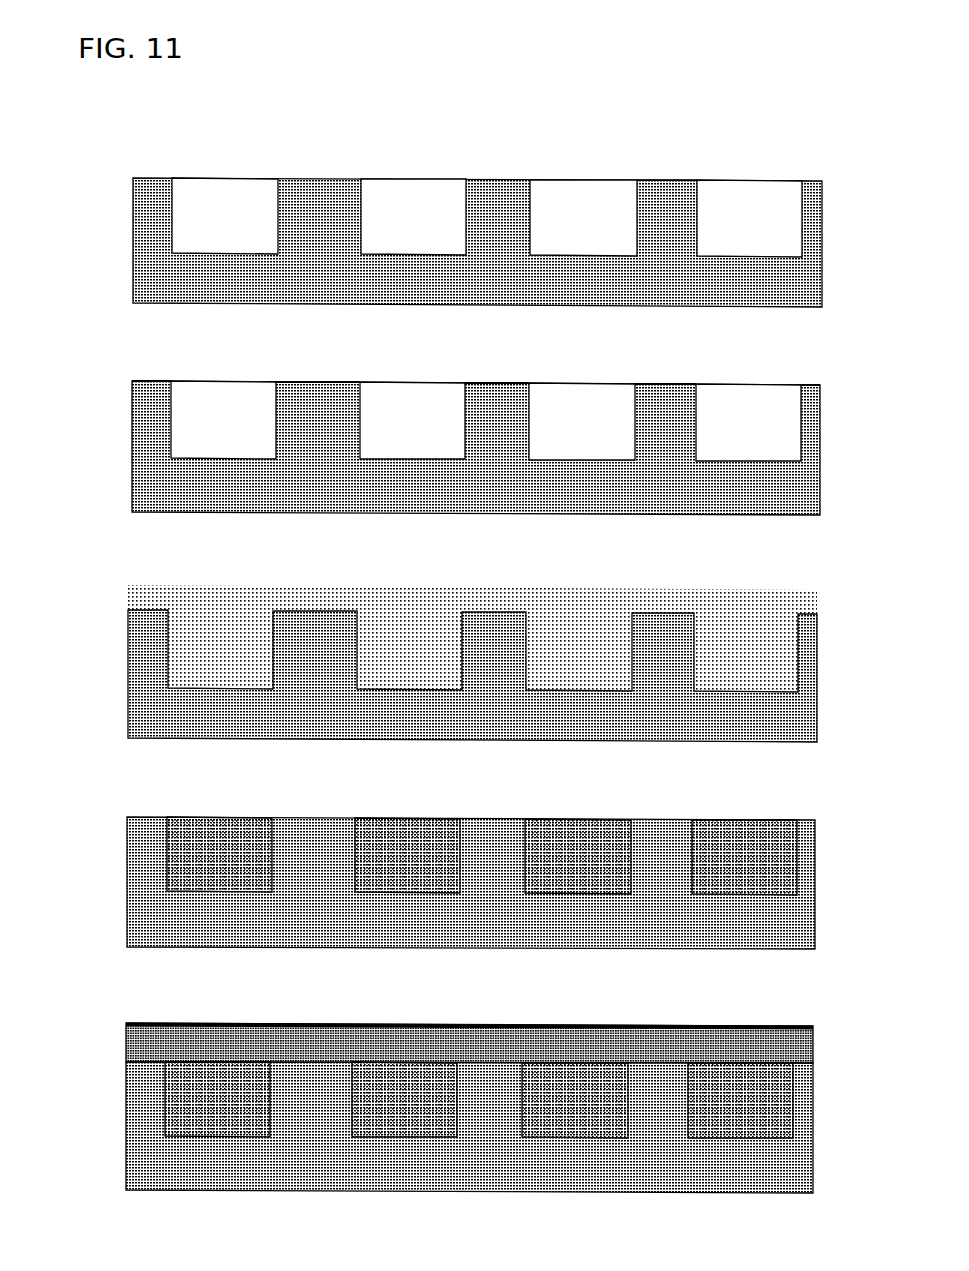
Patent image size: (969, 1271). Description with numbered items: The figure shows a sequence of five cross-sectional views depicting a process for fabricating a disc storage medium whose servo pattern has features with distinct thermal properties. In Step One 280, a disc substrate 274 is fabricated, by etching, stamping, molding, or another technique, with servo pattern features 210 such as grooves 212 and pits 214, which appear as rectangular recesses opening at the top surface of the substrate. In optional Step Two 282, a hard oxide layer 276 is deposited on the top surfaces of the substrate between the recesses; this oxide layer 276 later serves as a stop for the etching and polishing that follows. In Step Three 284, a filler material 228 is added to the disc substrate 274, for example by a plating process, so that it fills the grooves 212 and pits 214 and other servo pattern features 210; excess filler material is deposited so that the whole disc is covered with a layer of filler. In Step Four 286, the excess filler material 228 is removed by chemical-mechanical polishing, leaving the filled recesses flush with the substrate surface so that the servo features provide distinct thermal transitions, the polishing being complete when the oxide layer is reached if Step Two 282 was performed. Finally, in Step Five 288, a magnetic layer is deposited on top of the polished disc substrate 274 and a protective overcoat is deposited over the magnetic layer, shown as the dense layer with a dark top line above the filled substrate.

The servo pattern features 210 is at (802, 202).
The grooves 212 is at (636, 202).
The pits 214 is at (466, 198).
The filler material 228 is at (562, 590).
The disc substrate 274 is at (657, 181).
The hard oxide layer 276 is at (653, 384).
The Step One 280 is at (112, 235).
The Step Two 282 is at (112, 448).
The Step Three 284 is at (108, 693).
The Step Four 286 is at (108, 878).
The Step Five 288 is at (107, 1098).